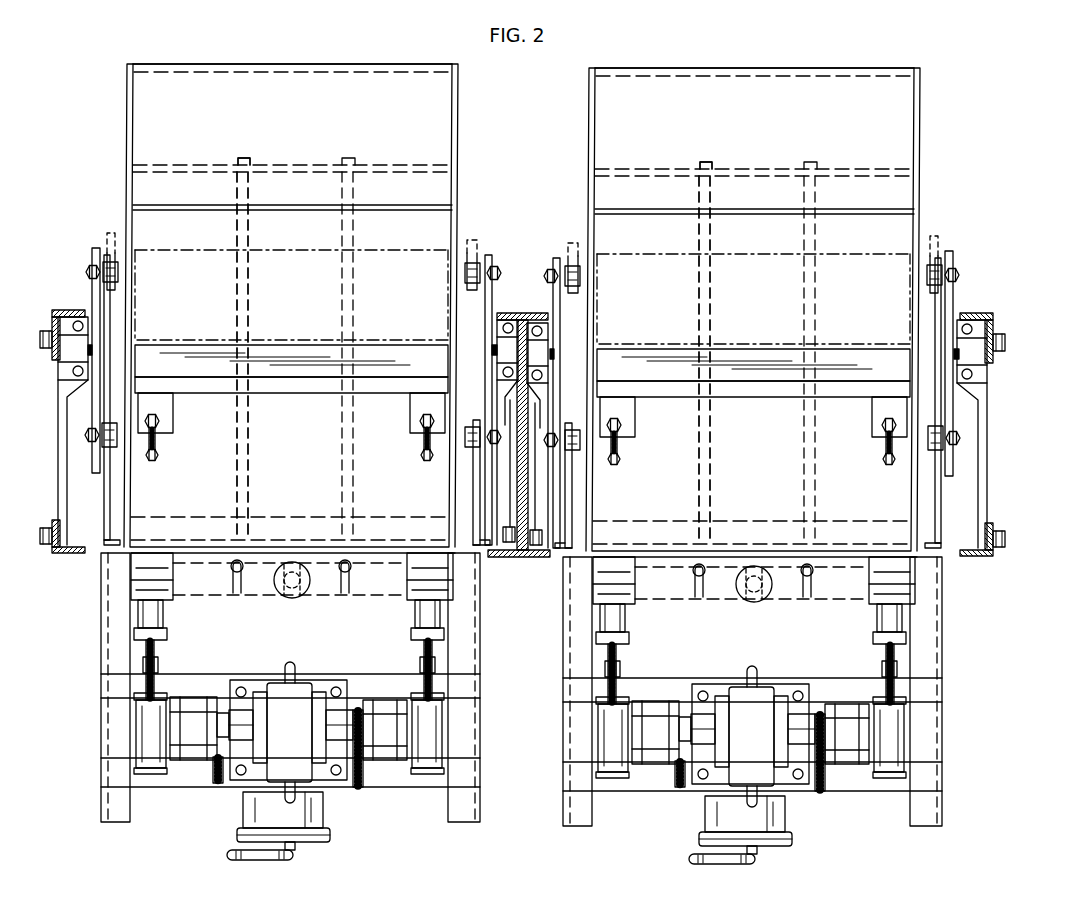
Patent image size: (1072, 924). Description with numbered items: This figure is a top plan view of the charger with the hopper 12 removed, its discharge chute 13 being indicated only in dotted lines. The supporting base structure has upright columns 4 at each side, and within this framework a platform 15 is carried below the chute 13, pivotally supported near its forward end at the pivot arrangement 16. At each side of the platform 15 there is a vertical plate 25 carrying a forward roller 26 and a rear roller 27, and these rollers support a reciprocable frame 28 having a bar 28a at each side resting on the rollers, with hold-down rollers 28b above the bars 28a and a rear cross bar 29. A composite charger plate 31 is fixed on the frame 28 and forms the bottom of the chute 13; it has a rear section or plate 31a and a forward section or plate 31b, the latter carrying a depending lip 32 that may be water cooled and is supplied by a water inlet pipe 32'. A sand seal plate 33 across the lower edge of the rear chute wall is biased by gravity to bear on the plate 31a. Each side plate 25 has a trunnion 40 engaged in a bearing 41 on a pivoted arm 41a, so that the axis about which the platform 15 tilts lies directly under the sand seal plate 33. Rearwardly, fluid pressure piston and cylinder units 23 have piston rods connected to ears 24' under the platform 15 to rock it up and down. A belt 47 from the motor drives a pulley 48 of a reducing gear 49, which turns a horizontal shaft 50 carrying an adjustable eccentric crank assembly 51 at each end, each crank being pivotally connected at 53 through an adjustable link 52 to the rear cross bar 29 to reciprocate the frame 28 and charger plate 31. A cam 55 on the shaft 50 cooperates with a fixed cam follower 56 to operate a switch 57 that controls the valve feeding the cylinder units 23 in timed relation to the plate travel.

The upright column 4 is at (60, 310).
The hopper 12 is at (405, 250).
The discharge chute 13 is at (217, 246).
The platform 15 is at (483, 726).
The pivot 16 is at (82, 348).
The fluid pressure piston and cylinder unit 23 is at (292, 598).
The ears 24' is at (544, 602).
The vertical plate 25 is at (125, 333).
The forward roller 26 is at (108, 250).
The rear roller 27 is at (107, 470).
The reciprocable frame 28 is at (124, 208).
The bar 28a is at (108, 500).
The hold-down roller 28b is at (104, 268).
The rear cross bar 29 is at (364, 556).
The composite charger plate 31 is at (155, 128).
The rear section or plate 31a is at (276, 490).
The forward section or plate 31b is at (308, 130).
The lip 32 is at (523, 56).
The water inlet pipe 32' is at (447, 586).
The sand seal plate 33 is at (280, 355).
The trunnion 40 is at (94, 388).
The bearing 41 is at (72, 362).
The pivoted arm 41a is at (60, 432).
The belt 47 is at (227, 856).
The pulley 48 is at (282, 862).
The reducing gear 49 is at (300, 683).
The horizontal shaft 50 is at (228, 748).
The adjustable eccentric crank assembly 51 is at (208, 698).
The adjustable link 52 is at (160, 667).
The pivotal connection 53 is at (160, 775).
The cam 55 is at (358, 788).
The fixed cam follower 56 is at (363, 732).
The switch 57 is at (332, 720).